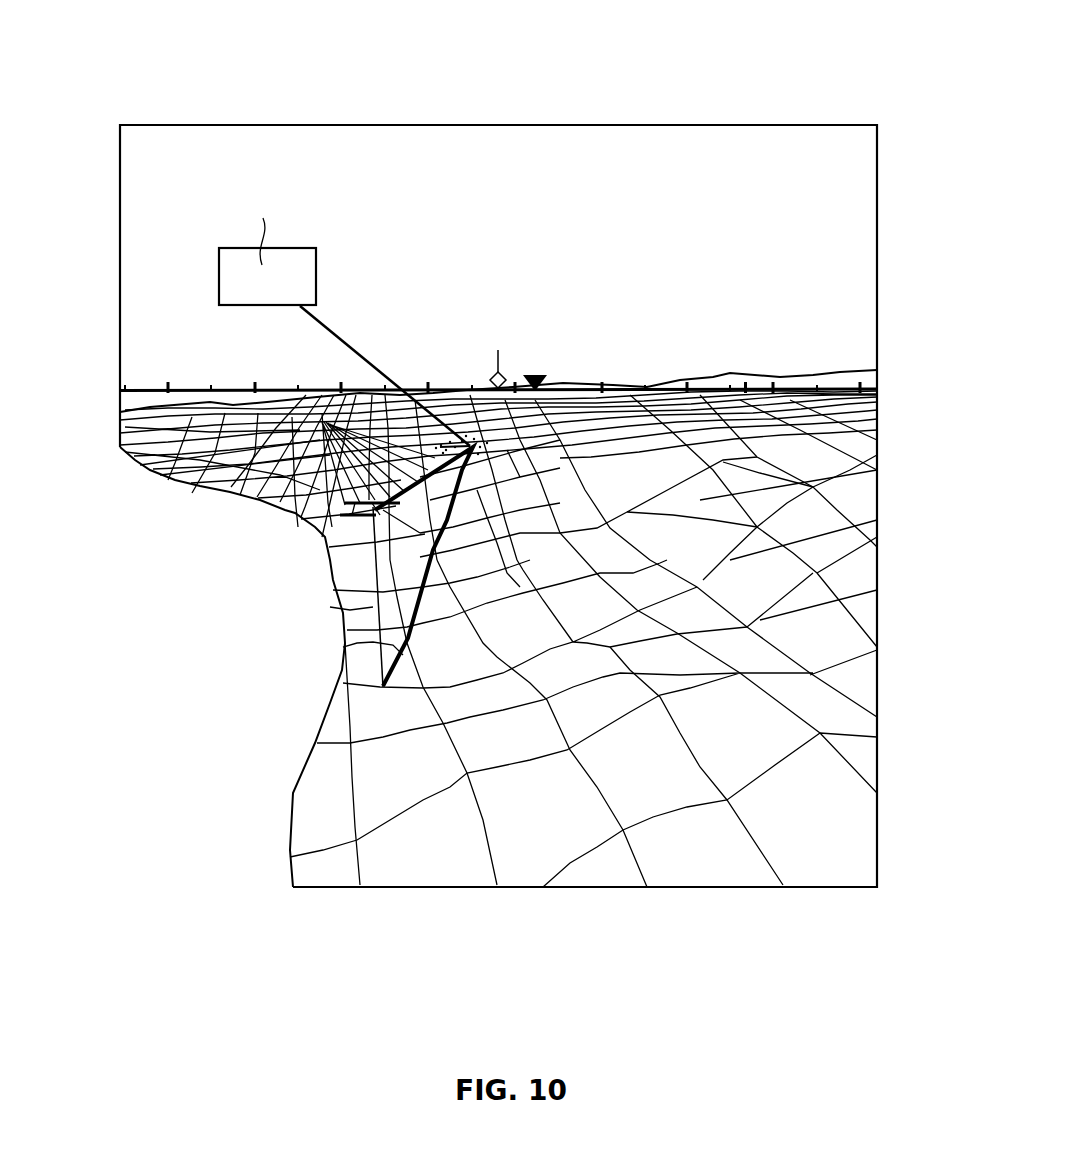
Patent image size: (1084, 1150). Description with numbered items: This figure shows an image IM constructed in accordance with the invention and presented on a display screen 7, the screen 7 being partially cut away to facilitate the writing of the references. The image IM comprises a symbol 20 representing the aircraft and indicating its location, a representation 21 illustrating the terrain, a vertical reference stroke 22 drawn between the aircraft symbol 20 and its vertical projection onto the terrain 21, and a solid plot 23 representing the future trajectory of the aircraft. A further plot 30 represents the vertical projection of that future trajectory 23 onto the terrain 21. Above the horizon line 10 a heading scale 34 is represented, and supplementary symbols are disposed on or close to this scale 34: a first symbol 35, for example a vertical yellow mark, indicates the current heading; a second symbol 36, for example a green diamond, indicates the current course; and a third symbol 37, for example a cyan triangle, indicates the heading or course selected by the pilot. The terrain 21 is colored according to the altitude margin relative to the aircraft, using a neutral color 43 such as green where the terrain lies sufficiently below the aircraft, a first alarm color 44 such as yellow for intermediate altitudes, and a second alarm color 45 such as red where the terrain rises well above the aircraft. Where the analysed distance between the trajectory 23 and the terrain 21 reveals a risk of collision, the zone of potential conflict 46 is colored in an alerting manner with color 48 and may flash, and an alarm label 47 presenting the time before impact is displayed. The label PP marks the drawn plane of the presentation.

The display screen 7 is at (672, 890).
The horizon line 10 is at (812, 365).
The symbol 20 is at (332, 534).
The representation illustrating the terrain 21 is at (576, 835).
The vertical reference stroke 22 is at (344, 608).
The plot 23 is at (373, 498).
The plot 30 is at (346, 647).
The heading scale 34 is at (108, 388).
The first symbol 35 is at (504, 368).
The second symbol 36 is at (516, 366).
The third symbol 37 is at (560, 372).
The neutral color 43 is at (338, 778).
The first alarm color 44 is at (207, 456).
The second alarm color 45 is at (746, 380).
The zone of potential conflict 46 is at (458, 432).
The alarm label 47 is at (316, 272).
The color 48 is at (440, 447).
The image IM is at (531, 215).
The projection plane PP is at (728, 117).